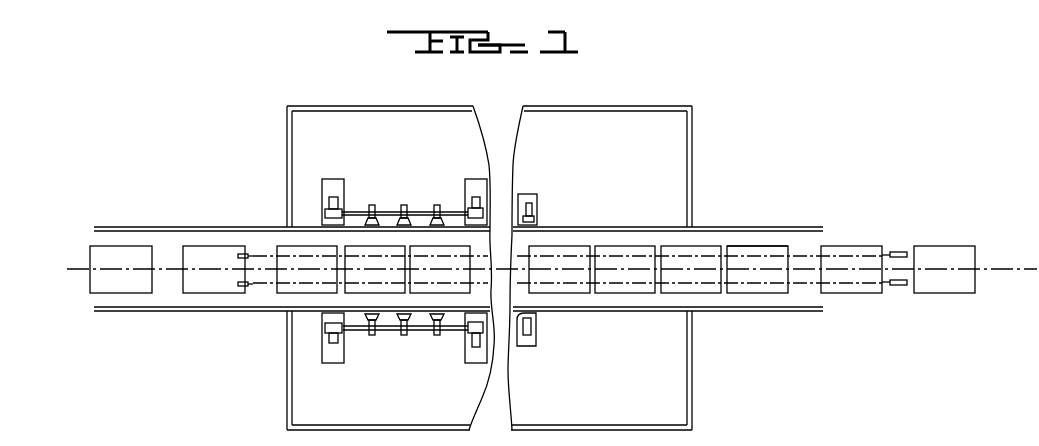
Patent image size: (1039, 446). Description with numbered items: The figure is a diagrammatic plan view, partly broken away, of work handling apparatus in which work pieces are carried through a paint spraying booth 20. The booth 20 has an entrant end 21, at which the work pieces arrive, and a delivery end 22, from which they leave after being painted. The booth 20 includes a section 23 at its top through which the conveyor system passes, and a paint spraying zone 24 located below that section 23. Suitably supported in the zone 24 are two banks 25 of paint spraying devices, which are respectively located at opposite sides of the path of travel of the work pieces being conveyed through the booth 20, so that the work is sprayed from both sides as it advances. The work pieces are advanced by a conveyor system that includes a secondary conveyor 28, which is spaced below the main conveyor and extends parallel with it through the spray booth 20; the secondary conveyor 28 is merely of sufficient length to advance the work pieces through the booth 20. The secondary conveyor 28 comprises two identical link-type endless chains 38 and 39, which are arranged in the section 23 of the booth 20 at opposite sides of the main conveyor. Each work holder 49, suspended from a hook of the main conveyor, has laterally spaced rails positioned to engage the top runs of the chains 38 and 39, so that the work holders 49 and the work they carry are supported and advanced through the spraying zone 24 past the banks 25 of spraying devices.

The paint spraying booth 20 is at (516, 268).
The entrant end 21 is at (220, 241).
The delivery end 22 is at (738, 237).
The section 23 is at (622, 228).
The paint spraying zone 24 is at (667, 378).
The banks of paint spraying devices 25 is at (422, 210).
The secondary conveyor 28 is at (258, 251).
The endless chain 38 is at (898, 249).
The endless chain 39 is at (899, 287).
The work holder 49 is at (779, 241).